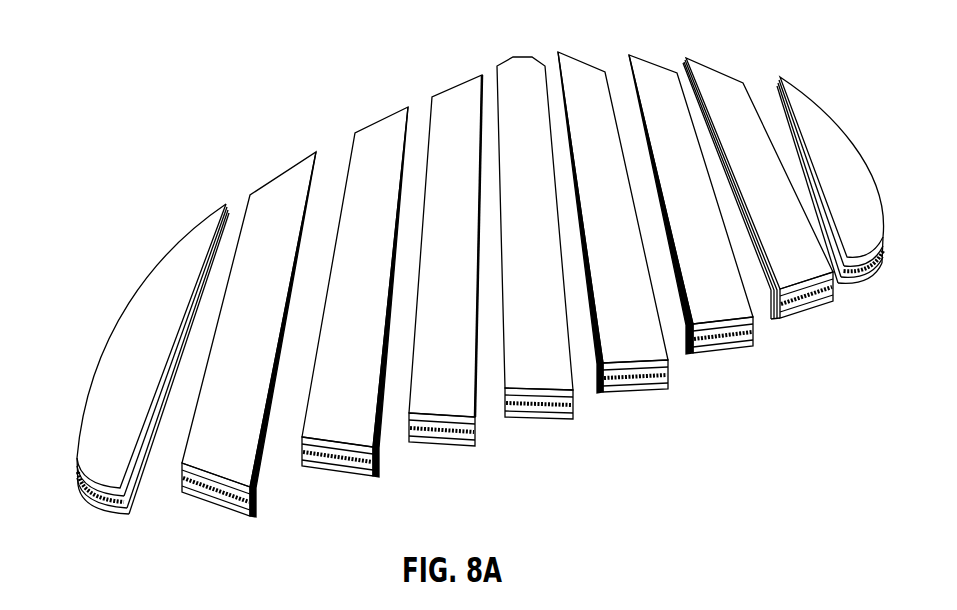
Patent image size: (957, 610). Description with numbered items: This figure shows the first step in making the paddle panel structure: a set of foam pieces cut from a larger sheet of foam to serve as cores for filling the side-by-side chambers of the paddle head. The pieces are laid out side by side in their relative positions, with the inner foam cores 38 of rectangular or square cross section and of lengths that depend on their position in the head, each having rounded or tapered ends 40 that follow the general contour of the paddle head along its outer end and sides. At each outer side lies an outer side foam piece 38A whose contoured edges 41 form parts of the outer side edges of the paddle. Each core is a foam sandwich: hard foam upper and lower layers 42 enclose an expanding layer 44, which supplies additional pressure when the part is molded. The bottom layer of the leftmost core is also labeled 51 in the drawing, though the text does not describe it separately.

The foam cores 38 is at (507, 309).
The outer side foam pieces 38A is at (449, 295).
The rounded or tapered ends 40 is at (270, 175).
The contoured edges 41 is at (77, 447).
The layers 42 is at (544, 381).
The expanding layer 44 is at (342, 463).
The bottom layer 51 is at (213, 498).